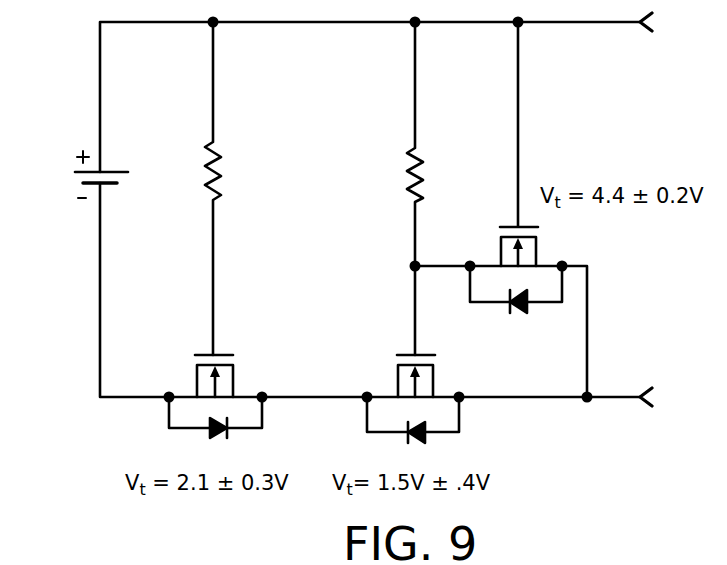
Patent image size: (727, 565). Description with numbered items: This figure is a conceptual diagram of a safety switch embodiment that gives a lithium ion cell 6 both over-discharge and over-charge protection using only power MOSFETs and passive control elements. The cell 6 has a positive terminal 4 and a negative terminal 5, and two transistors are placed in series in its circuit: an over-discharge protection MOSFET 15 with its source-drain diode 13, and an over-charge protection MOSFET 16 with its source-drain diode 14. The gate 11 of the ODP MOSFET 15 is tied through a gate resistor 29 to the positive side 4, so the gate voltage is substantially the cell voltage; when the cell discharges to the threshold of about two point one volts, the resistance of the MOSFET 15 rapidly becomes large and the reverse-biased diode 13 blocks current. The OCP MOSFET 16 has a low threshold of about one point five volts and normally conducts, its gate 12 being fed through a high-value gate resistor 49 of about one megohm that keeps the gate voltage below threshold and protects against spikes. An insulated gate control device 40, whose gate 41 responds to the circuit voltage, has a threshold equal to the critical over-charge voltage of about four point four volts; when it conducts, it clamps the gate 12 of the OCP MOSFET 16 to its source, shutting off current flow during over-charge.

The positive terminal 4 is at (114, 170).
The negative terminal 5 is at (112, 188).
The lithium ion cell 6 is at (94, 199).
The gate resistor 29 is at (222, 165).
The gate resistor 49 is at (421, 170).
The gate 11 is at (197, 353).
The gate 12 is at (387, 332).
The source-drain diode 13 is at (208, 438).
The source-drain diode 14 is at (406, 434).
The over-discharge protection MOSFET 15 is at (220, 358).
The over-charge protection MOSFET 16 is at (369, 353).
The insulated gate control device 40 is at (545, 167).
The gate of third transistor 41 is at (503, 224).